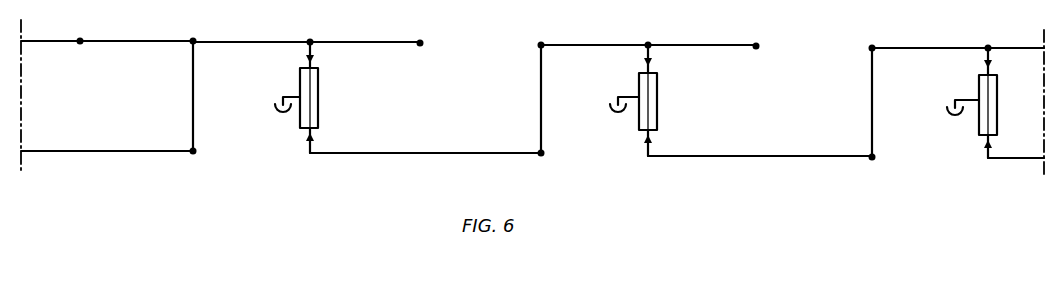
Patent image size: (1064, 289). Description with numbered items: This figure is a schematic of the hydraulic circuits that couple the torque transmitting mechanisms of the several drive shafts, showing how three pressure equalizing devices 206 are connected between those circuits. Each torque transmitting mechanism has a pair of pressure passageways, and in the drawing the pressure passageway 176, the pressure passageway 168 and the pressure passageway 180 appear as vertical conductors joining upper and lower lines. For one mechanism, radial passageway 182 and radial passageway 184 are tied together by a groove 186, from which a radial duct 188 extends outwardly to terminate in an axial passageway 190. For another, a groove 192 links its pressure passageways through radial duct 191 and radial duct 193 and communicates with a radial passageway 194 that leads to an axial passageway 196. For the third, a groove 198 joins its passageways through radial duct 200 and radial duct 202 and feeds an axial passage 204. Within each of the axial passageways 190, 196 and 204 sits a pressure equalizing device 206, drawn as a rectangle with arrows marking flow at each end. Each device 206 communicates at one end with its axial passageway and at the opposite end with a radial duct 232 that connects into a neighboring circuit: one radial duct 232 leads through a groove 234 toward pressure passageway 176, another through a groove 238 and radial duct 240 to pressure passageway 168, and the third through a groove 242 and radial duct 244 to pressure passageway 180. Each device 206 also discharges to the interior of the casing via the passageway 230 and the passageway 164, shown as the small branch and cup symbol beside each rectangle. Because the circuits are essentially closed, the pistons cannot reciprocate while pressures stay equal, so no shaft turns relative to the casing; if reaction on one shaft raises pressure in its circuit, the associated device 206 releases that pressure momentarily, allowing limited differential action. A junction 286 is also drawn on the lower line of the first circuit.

The passageway 164 is at (280, 103).
The pressure passageway 168 is at (541, 92).
The pressure passageway 176 is at (192, 88).
The pressure passageway 180 is at (873, 103).
The radial passageway 182 is at (420, 43).
The radial passageway 184 is at (193, 41).
The groove 186 is at (262, 42).
The radial duct 188 is at (310, 42).
The axial passageway 190 is at (312, 50).
The radial duct 191 is at (80, 41).
The groove 192 is at (45, 41).
The radial duct 193 is at (872, 48).
The radial passageway 194 is at (988, 48).
The axial passageway 196 is at (990, 57).
The groove 198 is at (595, 45).
The radial duct 200 is at (541, 45).
The radial duct 202 is at (756, 46).
The axial passageway 204 is at (650, 62).
The pressure equalizing device 206 is at (318, 98).
The radial passageway 230 is at (285, 97).
The radial duct 232 is at (312, 147).
The groove 234 is at (95, 151).
The groove 238 is at (403, 153).
The radial duct 240 is at (543, 153).
The groove 242 is at (755, 157).
The radial duct 244 is at (875, 158).
The junction 286 is at (193, 151).